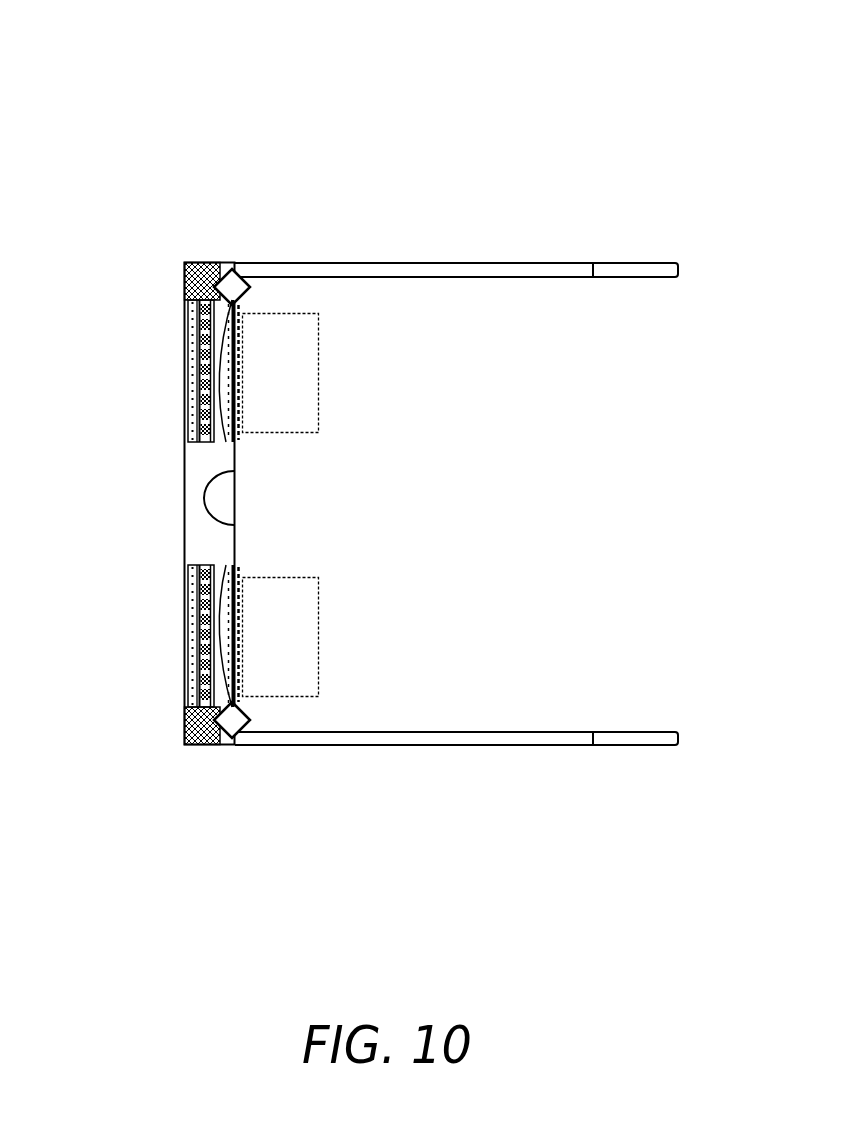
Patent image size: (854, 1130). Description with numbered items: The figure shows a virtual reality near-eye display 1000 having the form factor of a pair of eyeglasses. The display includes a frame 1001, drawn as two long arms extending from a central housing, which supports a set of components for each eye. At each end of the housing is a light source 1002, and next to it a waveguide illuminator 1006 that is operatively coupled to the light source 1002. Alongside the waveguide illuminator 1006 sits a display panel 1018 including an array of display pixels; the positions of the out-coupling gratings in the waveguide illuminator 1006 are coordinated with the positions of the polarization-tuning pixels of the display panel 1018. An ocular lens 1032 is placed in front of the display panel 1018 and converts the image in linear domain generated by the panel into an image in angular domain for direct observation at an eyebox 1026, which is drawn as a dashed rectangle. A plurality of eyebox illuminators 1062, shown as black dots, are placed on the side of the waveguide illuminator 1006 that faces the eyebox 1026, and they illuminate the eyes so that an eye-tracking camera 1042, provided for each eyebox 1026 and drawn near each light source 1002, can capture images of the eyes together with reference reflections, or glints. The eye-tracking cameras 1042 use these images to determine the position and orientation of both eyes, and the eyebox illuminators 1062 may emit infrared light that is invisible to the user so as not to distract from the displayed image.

The near-eye display 1000 is at (413, 108).
The frame 1001 is at (558, 262).
The light source 1002 is at (184, 277).
The waveguide illuminator 1006 is at (188, 327).
The display panel 1018 is at (204, 357).
The eyebox 1026 is at (304, 383).
The ocular lens 1032 is at (223, 398).
The eye-tracking camera 1042 is at (229, 263).
The eyebox illuminator 1062 is at (242, 440).